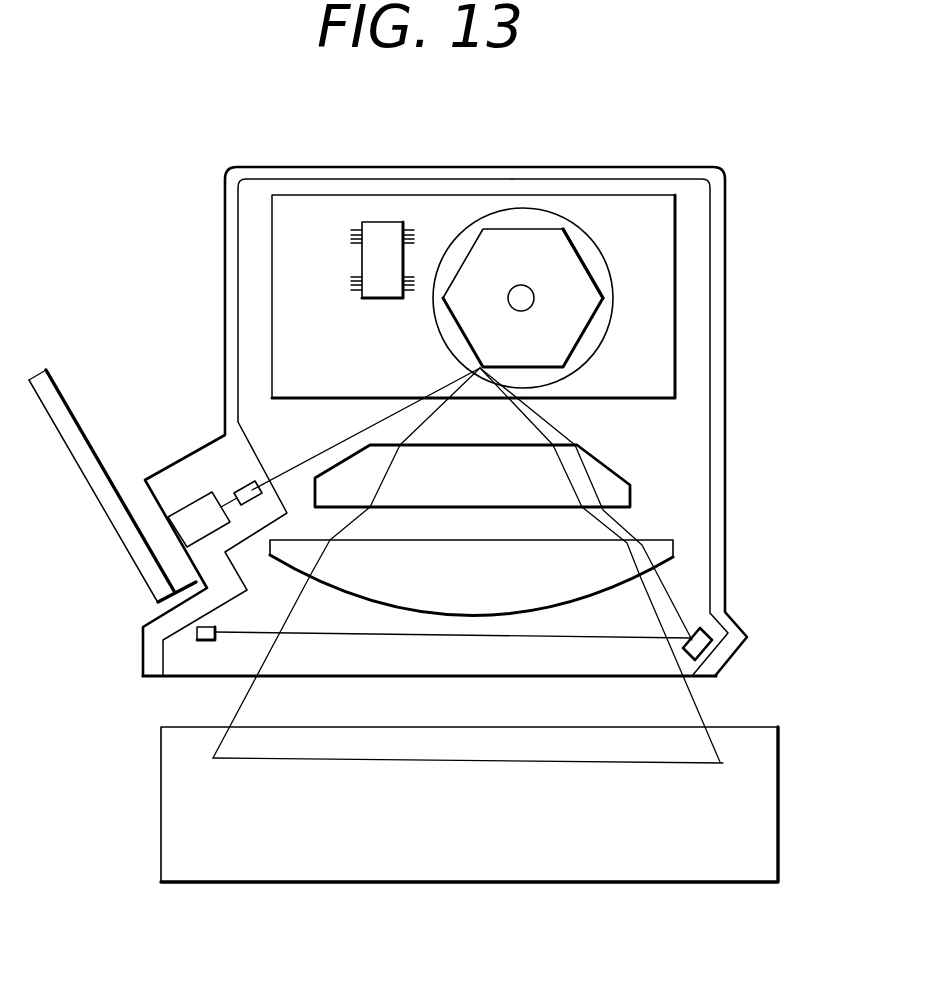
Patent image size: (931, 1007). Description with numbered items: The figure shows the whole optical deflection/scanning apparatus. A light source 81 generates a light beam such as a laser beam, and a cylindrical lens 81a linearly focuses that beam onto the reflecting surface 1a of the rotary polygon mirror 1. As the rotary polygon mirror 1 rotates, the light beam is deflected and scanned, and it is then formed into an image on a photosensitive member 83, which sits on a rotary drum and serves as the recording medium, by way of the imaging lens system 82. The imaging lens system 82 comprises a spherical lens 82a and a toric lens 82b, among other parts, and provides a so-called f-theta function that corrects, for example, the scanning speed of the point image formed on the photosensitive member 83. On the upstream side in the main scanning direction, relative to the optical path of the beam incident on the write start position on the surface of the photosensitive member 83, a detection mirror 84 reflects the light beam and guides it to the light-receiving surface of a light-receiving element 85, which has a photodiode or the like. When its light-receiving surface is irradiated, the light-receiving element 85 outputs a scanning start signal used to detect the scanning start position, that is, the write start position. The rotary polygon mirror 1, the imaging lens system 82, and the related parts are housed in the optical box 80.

The rotary polygon mirror 1 is at (570, 306).
The reflecting surface 1a is at (581, 253).
The optical box 80 is at (512, 167).
The light source 81 is at (163, 540).
The cylindrical lens 81a is at (240, 478).
The imaging lens system 82 is at (560, 530).
The spherical lens 82a is at (620, 498).
The toric lens 82b is at (665, 548).
The photosensitive member 83 is at (745, 796).
The detection mirror 84 is at (707, 649).
The light-receiving element 85 is at (203, 642).